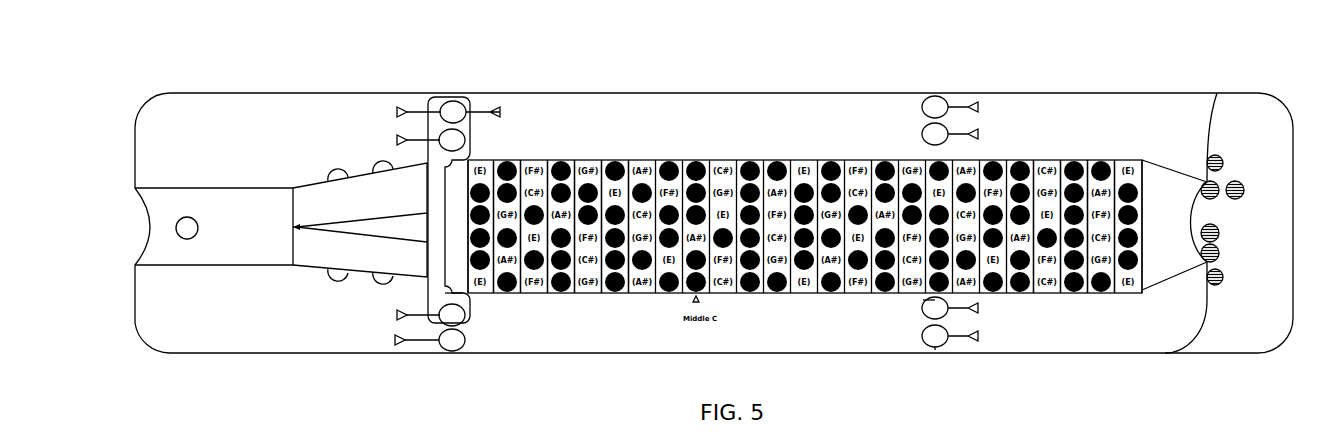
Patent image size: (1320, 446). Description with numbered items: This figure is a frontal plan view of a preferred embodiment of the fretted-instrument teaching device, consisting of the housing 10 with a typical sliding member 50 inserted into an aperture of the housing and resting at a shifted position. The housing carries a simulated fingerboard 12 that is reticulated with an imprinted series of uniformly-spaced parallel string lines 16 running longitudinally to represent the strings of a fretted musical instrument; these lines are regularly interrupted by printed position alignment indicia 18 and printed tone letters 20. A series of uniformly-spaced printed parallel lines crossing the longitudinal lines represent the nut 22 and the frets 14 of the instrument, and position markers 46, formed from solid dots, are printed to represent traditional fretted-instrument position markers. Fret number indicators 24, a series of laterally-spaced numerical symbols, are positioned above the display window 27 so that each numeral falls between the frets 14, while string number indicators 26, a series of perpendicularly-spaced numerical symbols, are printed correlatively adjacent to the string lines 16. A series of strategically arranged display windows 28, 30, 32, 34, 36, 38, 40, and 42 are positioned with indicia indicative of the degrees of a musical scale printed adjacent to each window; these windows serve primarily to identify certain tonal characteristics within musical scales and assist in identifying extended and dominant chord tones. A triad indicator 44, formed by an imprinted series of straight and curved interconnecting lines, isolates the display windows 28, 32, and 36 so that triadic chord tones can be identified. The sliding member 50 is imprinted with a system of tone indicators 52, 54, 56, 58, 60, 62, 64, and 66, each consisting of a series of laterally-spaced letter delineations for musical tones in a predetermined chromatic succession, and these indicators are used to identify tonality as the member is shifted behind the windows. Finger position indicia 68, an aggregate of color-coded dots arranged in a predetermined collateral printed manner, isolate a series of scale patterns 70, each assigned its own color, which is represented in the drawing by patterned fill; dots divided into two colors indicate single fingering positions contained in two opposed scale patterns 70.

The housing 10 is at (243, 130).
The simulated fingerboard 12 is at (815, 158).
The frets 14 is at (1092, 158).
The string lines 16 is at (738, 158).
The position alignment indicia 18 is at (1148, 165).
The tone letters 20 is at (1127, 285).
The nut 22 is at (494, 294).
The fret number indicators 24 is at (696, 158).
The string number indicators 26 is at (412, 288).
The display window 27 is at (1145, 160).
The display window 28 is at (448, 101).
The display window 30 is at (921, 106).
The display window 32 is at (430, 110).
The display window 34 is at (921, 131).
The display window 36 is at (463, 313).
The display window 38 is at (922, 311).
The display window 40 is at (462, 316).
The display window 42 is at (922, 334).
The triad indicator 44 is at (395, 138).
The position markers 46 is at (660, 294).
The sliding member 50 is at (1235, 140).
The tone indicator 52 is at (433, 102).
The tone indicator 54 is at (933, 97).
The tone indicator 56 is at (468, 112).
The tone indicator 58 is at (922, 140).
The tone indicator 60 is at (490, 294).
The tone indicator 62 is at (923, 299).
The tone indicator 64 is at (453, 350).
The tone indicator 66 is at (936, 347).
The finger position indicia 68 is at (532, 294).
The scale patterns 70 is at (1235, 179).